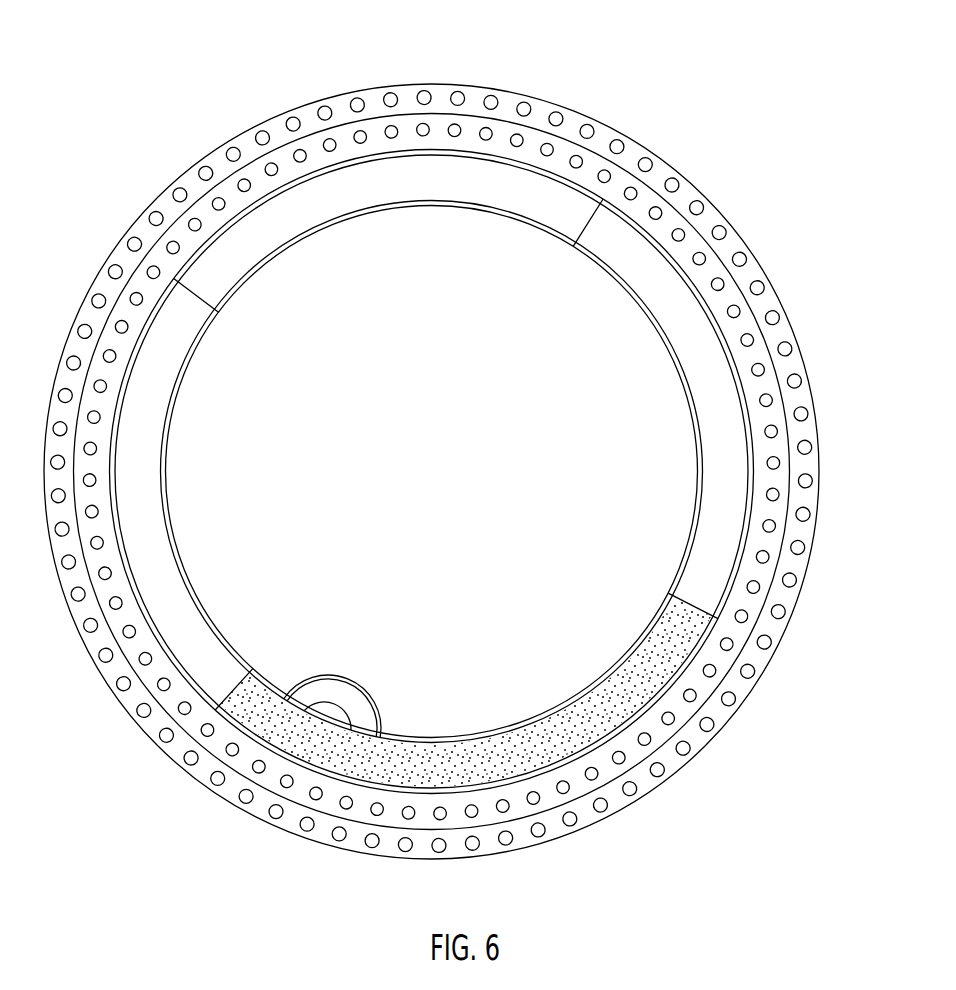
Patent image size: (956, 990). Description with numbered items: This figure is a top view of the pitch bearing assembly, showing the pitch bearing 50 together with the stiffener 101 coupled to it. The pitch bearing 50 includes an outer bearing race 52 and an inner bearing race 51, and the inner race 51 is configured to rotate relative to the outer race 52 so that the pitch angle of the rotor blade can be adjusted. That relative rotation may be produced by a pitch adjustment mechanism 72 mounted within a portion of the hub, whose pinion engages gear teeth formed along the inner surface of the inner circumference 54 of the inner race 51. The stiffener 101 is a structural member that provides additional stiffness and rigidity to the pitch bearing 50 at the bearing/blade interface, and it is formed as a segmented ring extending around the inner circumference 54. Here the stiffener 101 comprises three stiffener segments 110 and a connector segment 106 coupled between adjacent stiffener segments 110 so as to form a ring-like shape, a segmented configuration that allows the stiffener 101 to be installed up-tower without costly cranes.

The pitch bearing 50 is at (552, 100).
The outer bearing race 52 is at (630, 153).
The inner bearing race 51 is at (668, 223).
The inner circumference 54 is at (747, 385).
The stiffener 101 is at (155, 298).
The stiffener segments 110 is at (420, 190).
The connector segment 106 is at (470, 780).
The pitch adjustment mechanism 72 is at (363, 692).